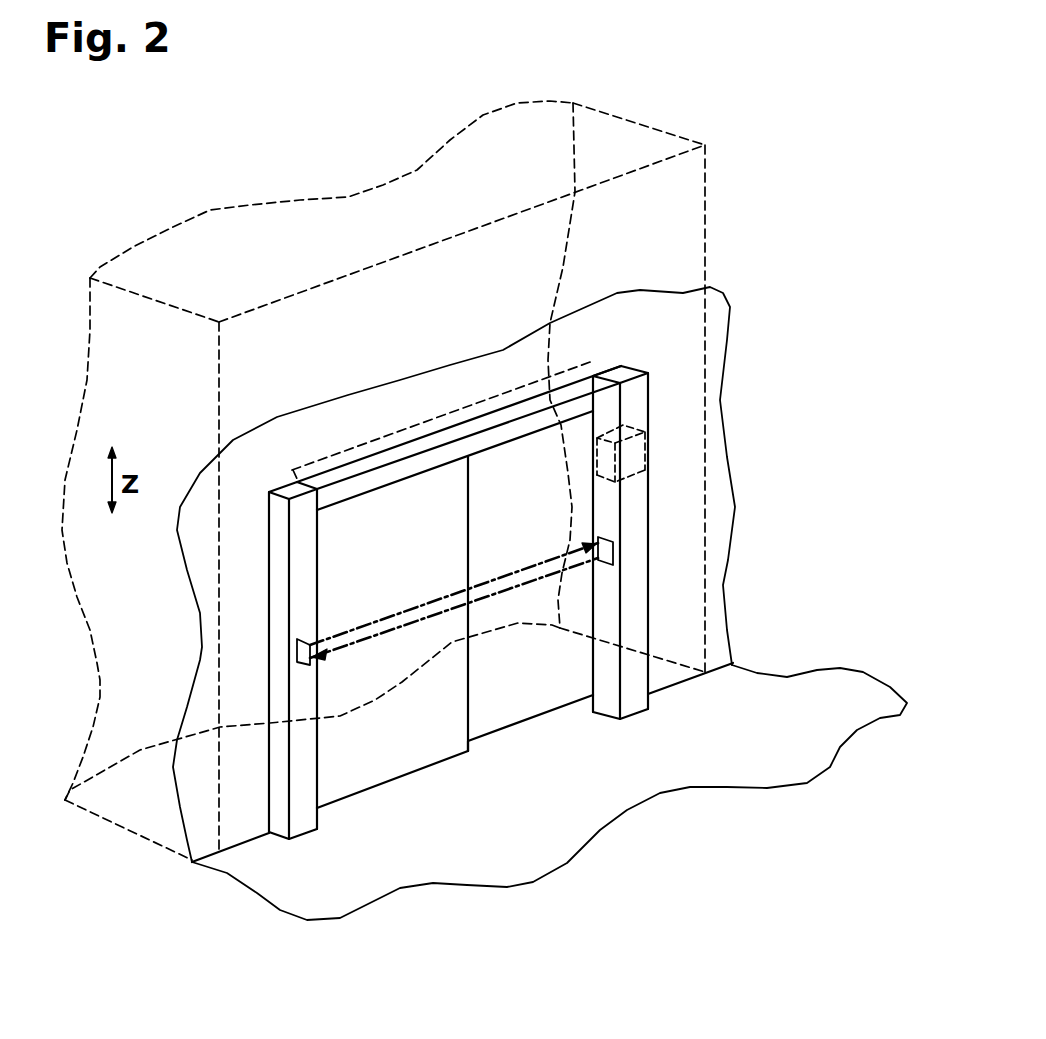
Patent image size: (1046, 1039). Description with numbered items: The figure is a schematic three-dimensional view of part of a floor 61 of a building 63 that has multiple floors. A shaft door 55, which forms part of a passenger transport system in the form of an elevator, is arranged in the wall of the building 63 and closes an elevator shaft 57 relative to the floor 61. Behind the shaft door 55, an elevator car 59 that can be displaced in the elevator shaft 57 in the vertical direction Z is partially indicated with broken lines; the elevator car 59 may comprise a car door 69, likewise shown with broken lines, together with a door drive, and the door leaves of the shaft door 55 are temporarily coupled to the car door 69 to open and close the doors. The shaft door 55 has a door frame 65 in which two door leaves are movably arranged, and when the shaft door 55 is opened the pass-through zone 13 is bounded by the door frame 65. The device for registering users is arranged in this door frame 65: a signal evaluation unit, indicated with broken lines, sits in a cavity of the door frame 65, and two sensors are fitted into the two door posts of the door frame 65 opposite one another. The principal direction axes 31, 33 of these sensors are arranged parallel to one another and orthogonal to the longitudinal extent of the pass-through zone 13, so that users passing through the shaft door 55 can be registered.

The pass-through zone 13 is at (482, 665).
The principal direction axis 31 is at (454, 700).
The principal direction axis 33 is at (454, 586).
The shaft door 55 is at (534, 607).
The elevator shaft 57 is at (661, 119).
The elevator car 59 is at (117, 569).
The floor 61 is at (508, 798).
The building 63 is at (630, 338).
The door frame 65 is at (459, 438).
The car door 69 is at (442, 396).